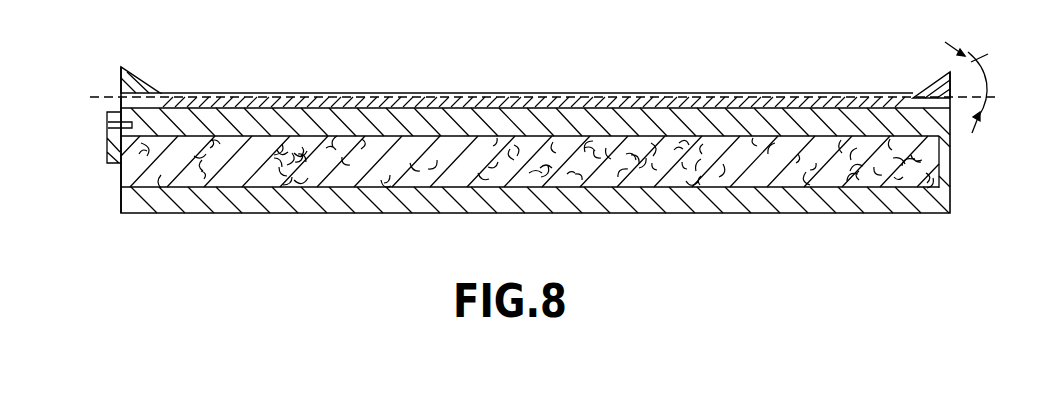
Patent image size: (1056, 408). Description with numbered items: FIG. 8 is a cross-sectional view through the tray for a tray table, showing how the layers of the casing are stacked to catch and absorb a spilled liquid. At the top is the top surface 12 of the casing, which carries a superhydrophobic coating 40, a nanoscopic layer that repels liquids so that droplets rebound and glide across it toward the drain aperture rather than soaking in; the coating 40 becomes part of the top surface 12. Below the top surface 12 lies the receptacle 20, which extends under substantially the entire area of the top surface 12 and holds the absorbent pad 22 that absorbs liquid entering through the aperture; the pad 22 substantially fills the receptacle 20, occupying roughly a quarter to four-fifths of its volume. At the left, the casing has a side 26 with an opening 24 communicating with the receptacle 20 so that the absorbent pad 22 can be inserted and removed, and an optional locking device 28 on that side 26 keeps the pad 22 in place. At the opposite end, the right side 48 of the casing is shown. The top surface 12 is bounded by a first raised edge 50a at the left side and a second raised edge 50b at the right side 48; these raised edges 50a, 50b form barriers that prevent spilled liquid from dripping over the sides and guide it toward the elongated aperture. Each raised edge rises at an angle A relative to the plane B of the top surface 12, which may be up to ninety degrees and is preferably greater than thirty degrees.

The top surface 12 is at (628, 98).
The receptacle 20 is at (937, 152).
The absorbent pad 22 is at (310, 180).
The opening 24 is at (121, 172).
The side 26 is at (121, 107).
The locking device 28 is at (106, 142).
The superhydrophobic coating 40 is at (232, 98).
The right side 48 is at (952, 180).
The first raised edge 50a is at (143, 87).
The second raised edge 50b is at (933, 87).
The angle A is at (985, 75).
The plane B is at (985, 100).